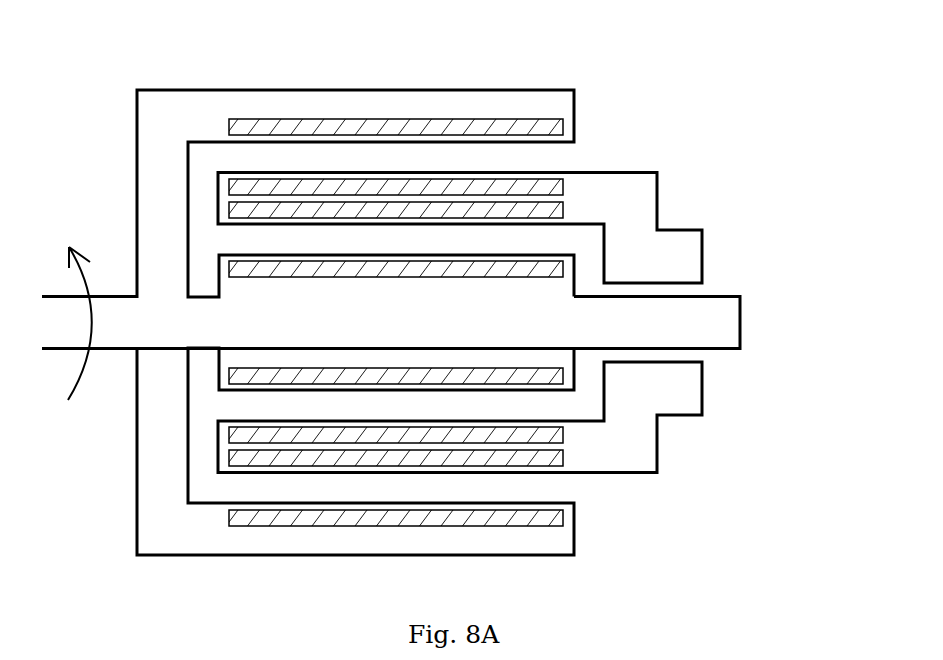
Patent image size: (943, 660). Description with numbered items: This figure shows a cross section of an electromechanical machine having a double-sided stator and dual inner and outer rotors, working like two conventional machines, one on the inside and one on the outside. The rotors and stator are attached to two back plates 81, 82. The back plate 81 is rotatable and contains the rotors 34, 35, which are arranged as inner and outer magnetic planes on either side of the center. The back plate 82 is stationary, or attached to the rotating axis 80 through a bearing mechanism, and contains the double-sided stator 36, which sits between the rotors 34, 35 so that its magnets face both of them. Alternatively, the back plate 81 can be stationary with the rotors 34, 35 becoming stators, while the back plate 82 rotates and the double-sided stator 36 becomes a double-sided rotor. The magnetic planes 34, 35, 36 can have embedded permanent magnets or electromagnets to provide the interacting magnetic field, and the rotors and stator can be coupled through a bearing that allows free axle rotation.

The back plate 81 is at (162, 183).
The rotating axis 80 is at (713, 320).
The back plate 82 is at (643, 248).
The rotor 35 is at (533, 128).
The double-sided stator 36 is at (553, 187).
The rotor 34 is at (465, 268).